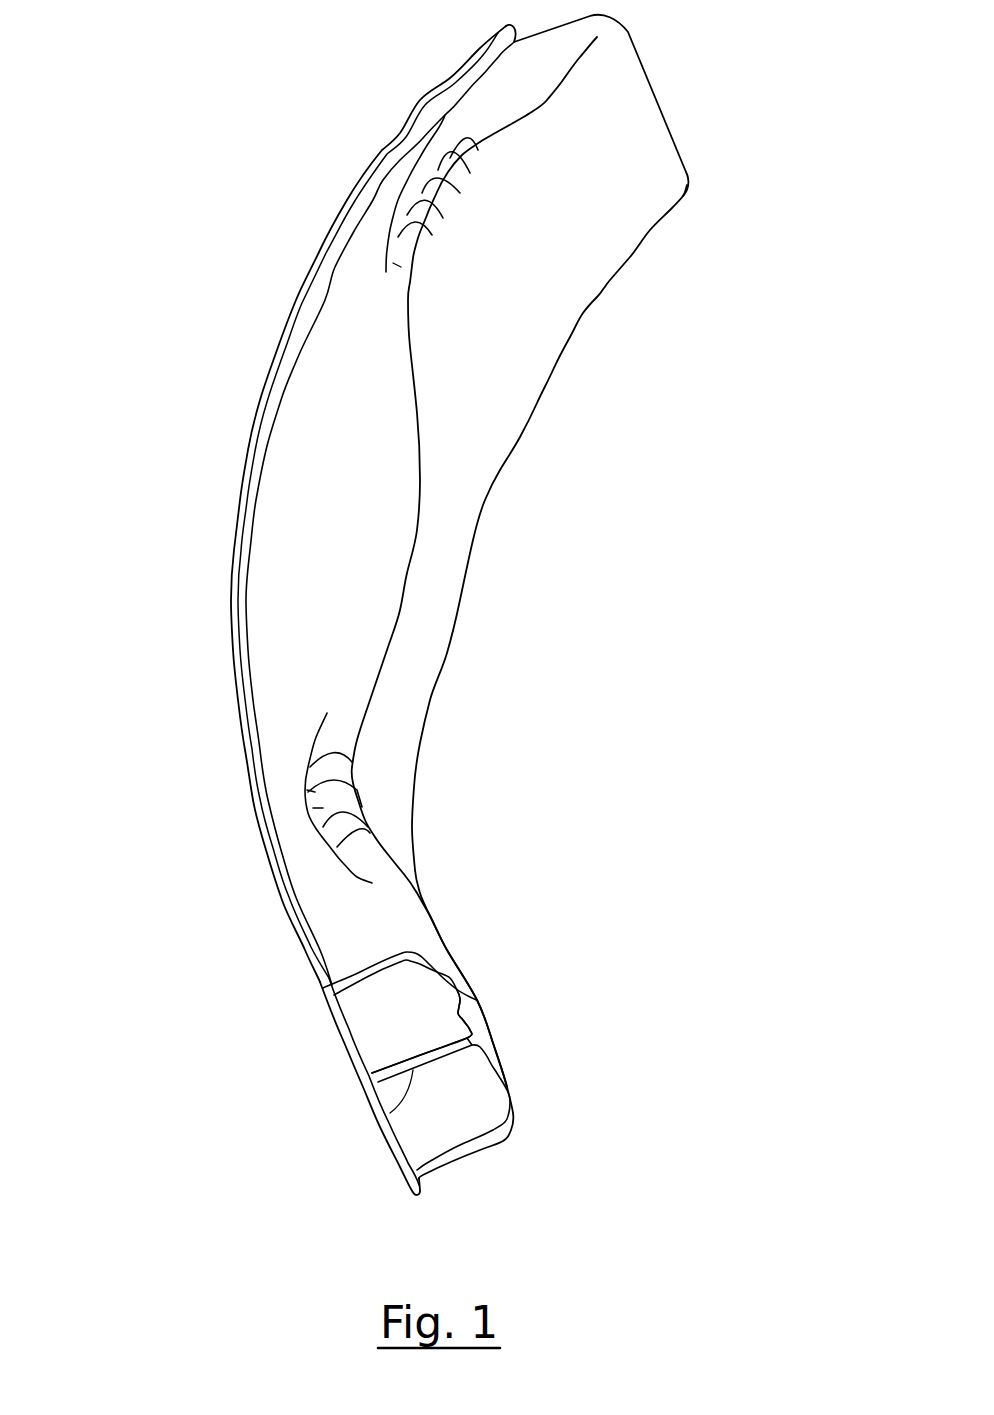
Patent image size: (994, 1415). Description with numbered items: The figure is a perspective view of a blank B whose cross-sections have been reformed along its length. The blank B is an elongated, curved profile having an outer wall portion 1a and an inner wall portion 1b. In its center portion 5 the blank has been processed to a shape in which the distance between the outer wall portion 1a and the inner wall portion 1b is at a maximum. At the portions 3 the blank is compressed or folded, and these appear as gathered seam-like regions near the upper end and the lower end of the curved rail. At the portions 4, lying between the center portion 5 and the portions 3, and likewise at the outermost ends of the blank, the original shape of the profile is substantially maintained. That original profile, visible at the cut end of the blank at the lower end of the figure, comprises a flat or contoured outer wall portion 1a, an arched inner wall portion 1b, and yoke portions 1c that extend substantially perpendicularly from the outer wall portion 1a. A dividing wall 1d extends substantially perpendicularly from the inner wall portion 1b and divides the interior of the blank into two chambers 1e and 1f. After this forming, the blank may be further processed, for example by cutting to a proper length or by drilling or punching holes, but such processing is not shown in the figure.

The outer wall portion 1a is at (343, 1060).
The inner wall portion 1b is at (480, 1036).
The yoke portions 1c is at (382, 942).
The dividing wall 1d is at (383, 1117).
The chamber 1e is at (377, 1022).
The chamber 1f is at (468, 1112).
The compressed or folded portions 3 is at (490, 227).
The portions 4 is at (451, 410).
The center portion 5 is at (433, 575).
The blank B is at (132, 650).